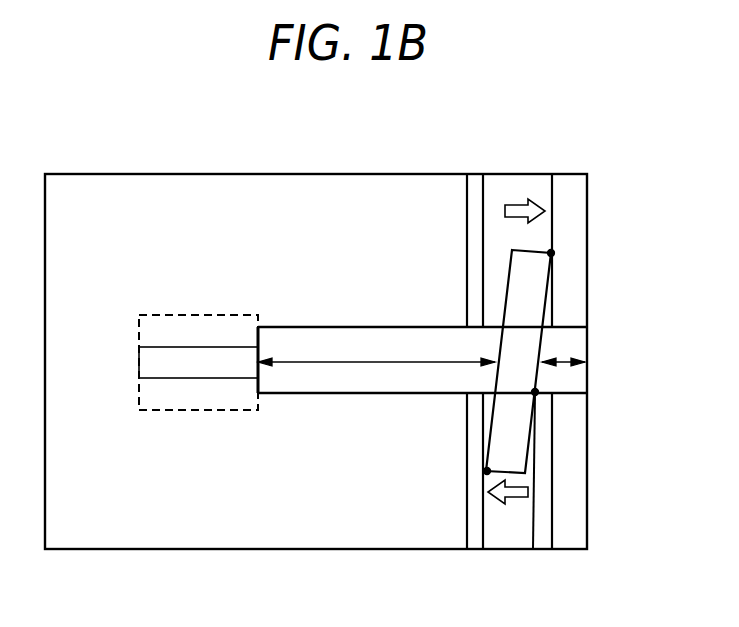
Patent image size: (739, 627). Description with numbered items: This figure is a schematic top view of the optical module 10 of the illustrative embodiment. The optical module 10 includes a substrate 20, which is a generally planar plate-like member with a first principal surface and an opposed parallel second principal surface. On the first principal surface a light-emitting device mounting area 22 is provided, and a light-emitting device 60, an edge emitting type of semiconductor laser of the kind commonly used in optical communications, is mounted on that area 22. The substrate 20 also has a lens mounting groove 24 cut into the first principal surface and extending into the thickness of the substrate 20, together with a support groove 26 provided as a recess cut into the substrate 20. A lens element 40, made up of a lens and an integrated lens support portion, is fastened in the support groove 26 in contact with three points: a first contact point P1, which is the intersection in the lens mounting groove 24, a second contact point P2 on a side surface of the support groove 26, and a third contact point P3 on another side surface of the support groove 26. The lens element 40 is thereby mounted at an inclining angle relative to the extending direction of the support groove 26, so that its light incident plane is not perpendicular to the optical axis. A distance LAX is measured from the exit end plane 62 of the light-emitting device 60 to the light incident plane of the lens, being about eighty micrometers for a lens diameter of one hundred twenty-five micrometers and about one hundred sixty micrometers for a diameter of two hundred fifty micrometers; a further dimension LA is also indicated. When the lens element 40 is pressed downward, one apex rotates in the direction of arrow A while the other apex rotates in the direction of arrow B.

The optical module 10 is at (632, 71).
The substrate 20 is at (331, 192).
The light-emitting device mounting area 22 is at (178, 313).
The lens mounting groove 24 is at (368, 342).
The support groove 26 is at (527, 192).
The lens element 40 is at (515, 283).
The light-emitting device 60 is at (229, 363).
The exit end plane 62 is at (260, 352).
The distance LAX is at (431, 362).
The gap distance LA is at (562, 360).
The first contact point P1 is at (535, 392).
The second contact point P2 is at (551, 253).
The third contact point P3 is at (487, 470).
The arrow A is at (509, 522).
The arrow B is at (513, 234).